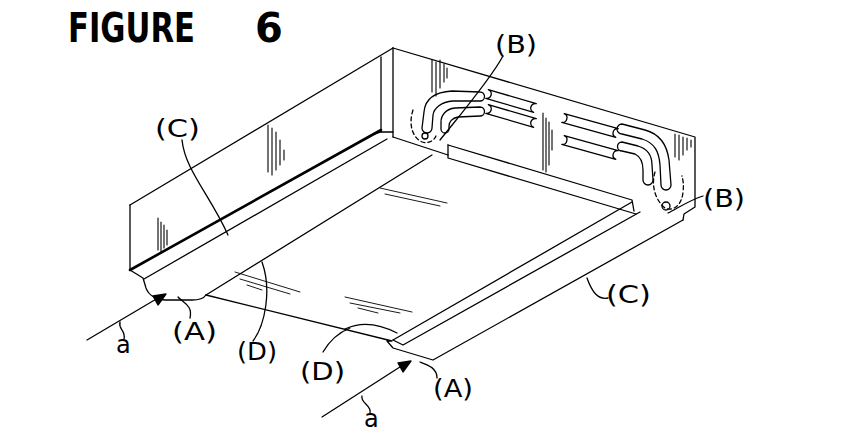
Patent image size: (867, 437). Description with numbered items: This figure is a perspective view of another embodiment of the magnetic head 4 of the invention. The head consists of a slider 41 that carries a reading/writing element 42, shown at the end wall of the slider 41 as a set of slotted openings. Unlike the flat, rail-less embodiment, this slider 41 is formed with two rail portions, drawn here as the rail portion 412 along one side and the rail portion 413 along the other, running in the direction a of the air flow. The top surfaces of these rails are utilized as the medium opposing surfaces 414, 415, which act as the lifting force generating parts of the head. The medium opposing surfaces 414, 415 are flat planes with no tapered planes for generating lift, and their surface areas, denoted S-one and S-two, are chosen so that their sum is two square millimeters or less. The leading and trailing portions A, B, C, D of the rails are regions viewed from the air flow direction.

The lid 4 is at (602, 74).
The slider 41 is at (315, 128).
The reading/writing element 42 is at (447, 90).
The step portion of lid 412 is at (272, 205).
The rail portion 413 is at (470, 303).
The medium opposing surface 414 is at (291, 209).
The medium opposing surface 415 is at (543, 266).